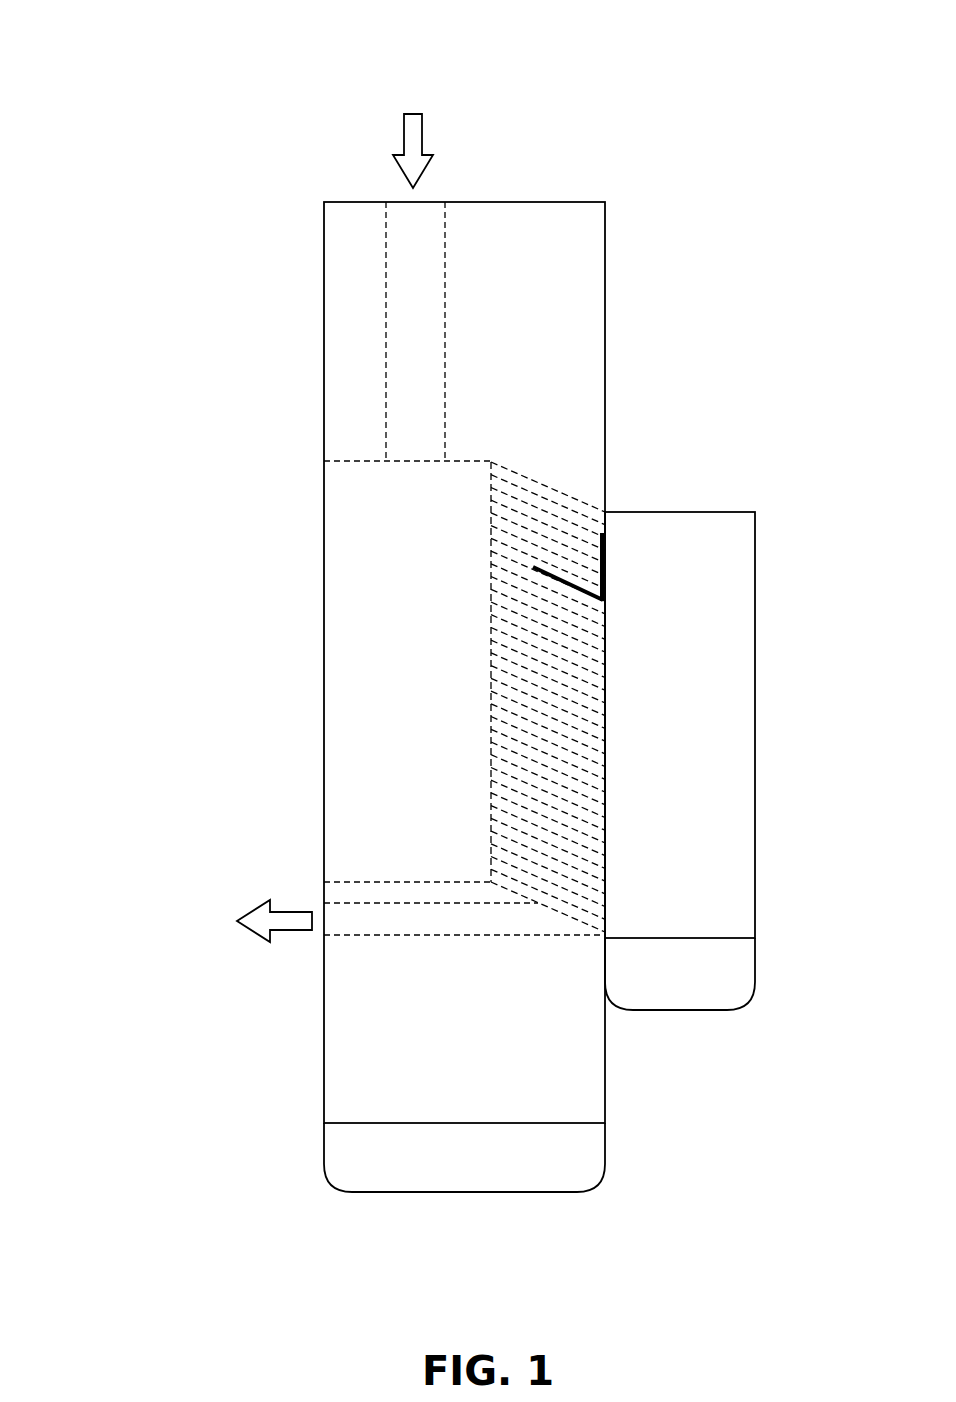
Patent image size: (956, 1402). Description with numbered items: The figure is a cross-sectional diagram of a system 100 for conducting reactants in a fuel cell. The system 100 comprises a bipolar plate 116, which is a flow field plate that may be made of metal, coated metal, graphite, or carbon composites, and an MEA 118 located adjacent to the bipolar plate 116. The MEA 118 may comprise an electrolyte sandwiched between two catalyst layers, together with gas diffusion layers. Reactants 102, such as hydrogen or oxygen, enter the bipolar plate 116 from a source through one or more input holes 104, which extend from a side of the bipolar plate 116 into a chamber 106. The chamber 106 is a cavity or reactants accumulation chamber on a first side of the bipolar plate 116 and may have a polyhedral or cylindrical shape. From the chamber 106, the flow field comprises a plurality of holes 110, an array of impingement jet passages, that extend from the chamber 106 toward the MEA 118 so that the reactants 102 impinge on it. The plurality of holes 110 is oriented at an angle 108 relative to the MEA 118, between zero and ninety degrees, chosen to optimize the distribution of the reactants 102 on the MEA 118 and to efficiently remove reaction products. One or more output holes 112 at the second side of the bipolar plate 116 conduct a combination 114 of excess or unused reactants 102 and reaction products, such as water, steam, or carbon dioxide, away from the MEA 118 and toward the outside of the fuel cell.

The system 100 is at (226, 58).
The reactants 102 is at (405, 112).
The input holes 104 is at (447, 297).
The chamber 106 is at (332, 460).
The angle 108 is at (575, 583).
The plurality of holes 110 is at (579, 491).
The output holes 112 is at (494, 940).
The combination of reactants and reaction products 114 is at (255, 908).
The bipolar plate 116 is at (463, 1192).
The membrane electrode assembly 118 is at (678, 1010).